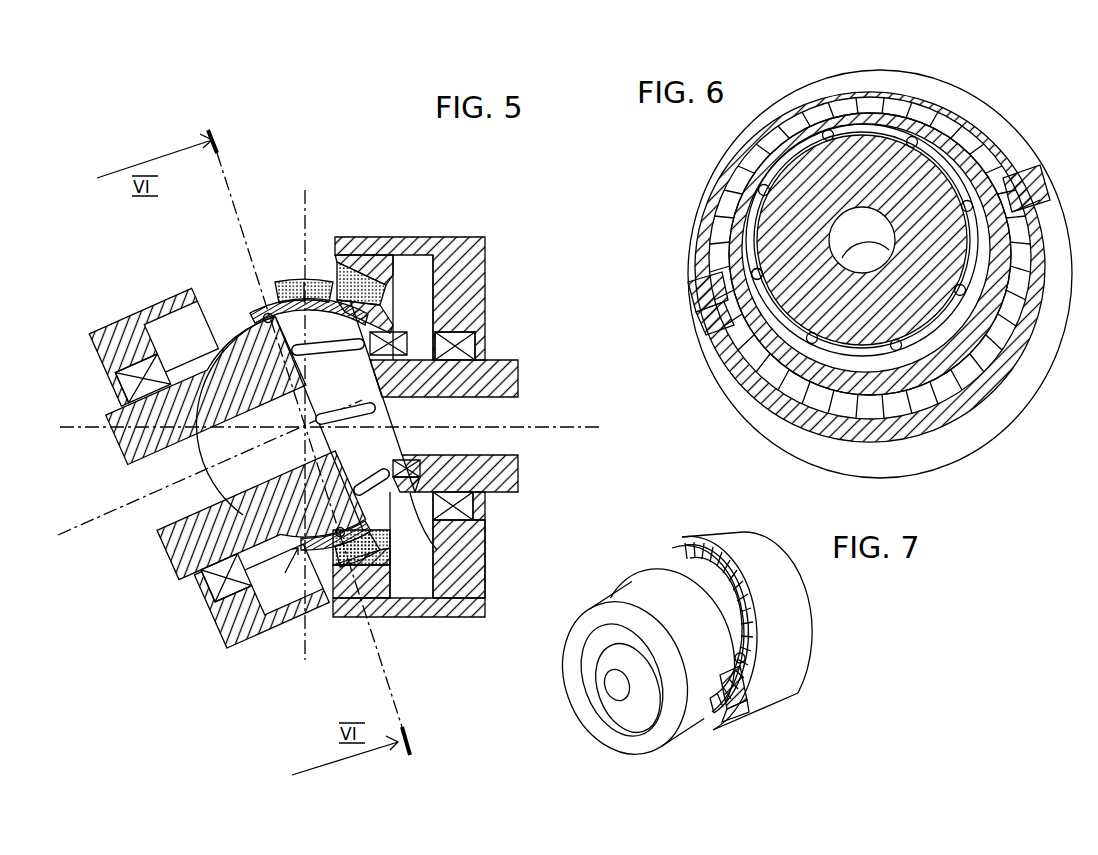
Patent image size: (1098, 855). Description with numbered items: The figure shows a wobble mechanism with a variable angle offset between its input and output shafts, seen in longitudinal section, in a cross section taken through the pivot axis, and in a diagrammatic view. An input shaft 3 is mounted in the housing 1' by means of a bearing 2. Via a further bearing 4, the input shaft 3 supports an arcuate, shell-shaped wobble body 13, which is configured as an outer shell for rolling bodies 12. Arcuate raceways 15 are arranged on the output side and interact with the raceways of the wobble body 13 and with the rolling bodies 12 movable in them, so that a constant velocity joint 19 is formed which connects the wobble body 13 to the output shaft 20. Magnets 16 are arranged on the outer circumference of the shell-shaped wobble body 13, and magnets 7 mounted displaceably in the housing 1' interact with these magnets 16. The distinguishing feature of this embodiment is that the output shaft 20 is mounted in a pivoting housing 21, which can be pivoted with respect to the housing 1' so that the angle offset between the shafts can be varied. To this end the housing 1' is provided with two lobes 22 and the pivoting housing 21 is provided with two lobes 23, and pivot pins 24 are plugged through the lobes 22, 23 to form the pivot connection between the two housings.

In FIG. 5, the housing 1' is at (422, 283).
In FIG. 6, the housing 1' is at (880, 274).
In FIG. 7, the housing 1' is at (757, 631).
In FIG. 5, the bearing 2 is at (487, 345).
In FIG. 5, the input shaft 3 is at (510, 412).
In FIG. 5, the bearing 4 is at (470, 548).
In FIG. 5, the magnets 7 is at (365, 272).
In FIG. 6, the magnets 7 is at (775, 400).
In FIG. 7, the magnets 7 is at (722, 572).
In FIG. 5, the rolling bodies 12 is at (273, 298).
In FIG. 6, the rolling bodies 12 is at (735, 172).
In FIG. 5, the wobble body 13 is at (262, 308).
In FIG. 6, the wobble body 13 is at (722, 355).
In FIG. 5, the arcuate raceways 15 is at (268, 522).
In FIG. 5, the magnets 16 is at (336, 275).
In FIG. 6, the magnets 16 is at (748, 380).
In FIG. 7, the magnets 16 is at (690, 548).
In FIG. 5, the constant velocity joint 19 is at (299, 571).
In FIG. 5, the output shaft 20 is at (183, 585).
In FIG. 6, the output shaft 20 is at (762, 233).
In FIG. 7, the output shaft 20 is at (596, 668).
In FIG. 5, the pivoting housing 21 is at (135, 318).
In FIG. 7, the pivoting housing 21 is at (605, 600).
In FIG. 6, the lobes 22 is at (694, 290).
In FIG. 7, the lobes 22 is at (748, 690).
In FIG. 6, the lobes 23 is at (708, 332).
In FIG. 7, the lobes 23 is at (730, 706).
In FIG. 6, the pivot pins 24 is at (690, 302).
In FIG. 7, the pivot pins 24 is at (746, 658).